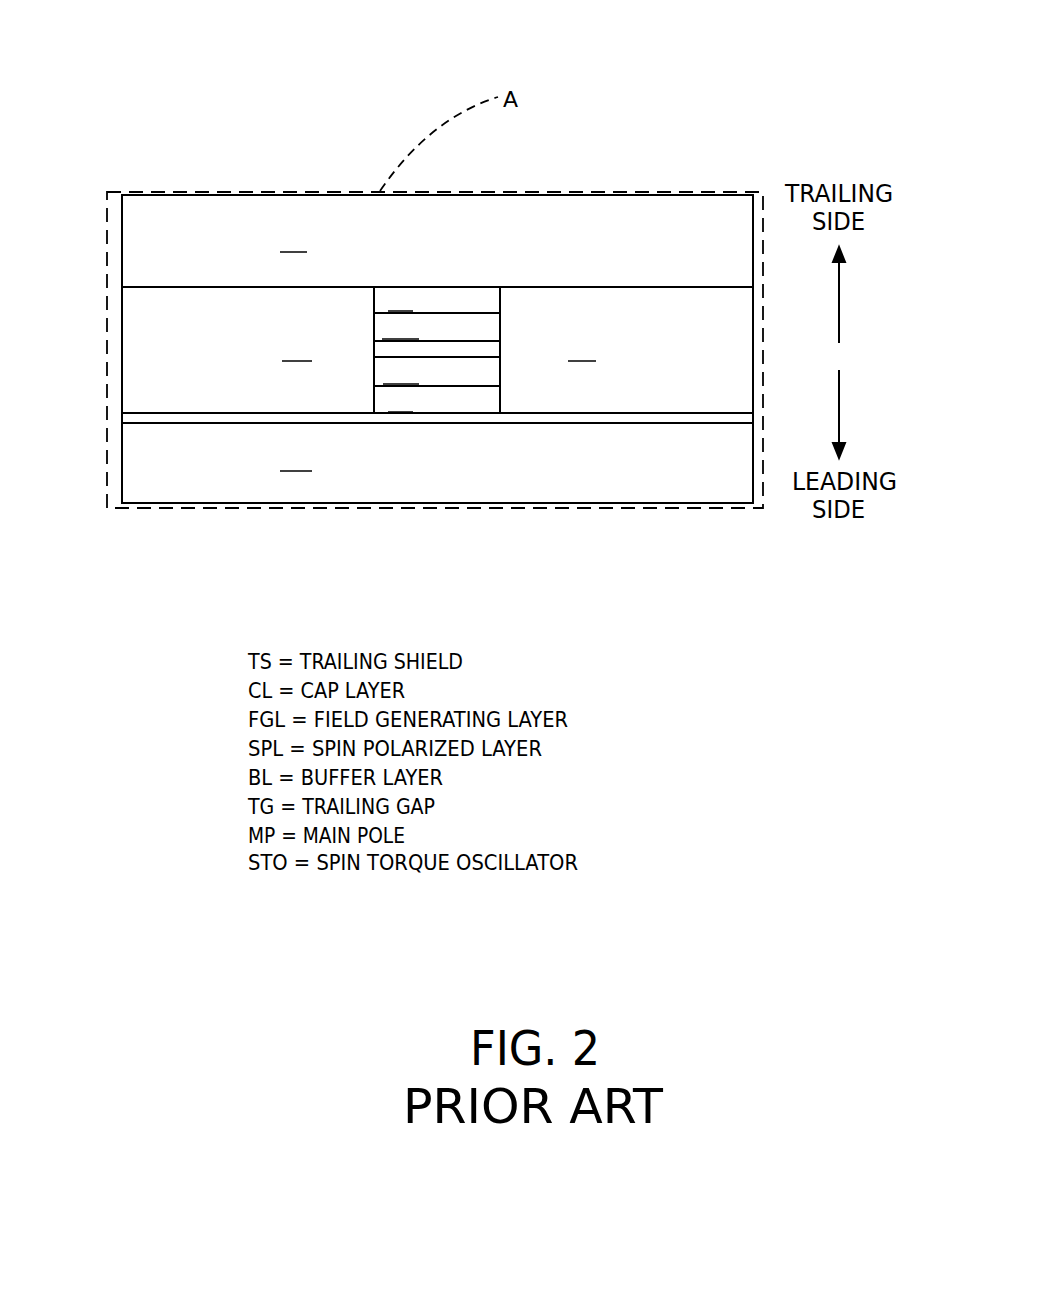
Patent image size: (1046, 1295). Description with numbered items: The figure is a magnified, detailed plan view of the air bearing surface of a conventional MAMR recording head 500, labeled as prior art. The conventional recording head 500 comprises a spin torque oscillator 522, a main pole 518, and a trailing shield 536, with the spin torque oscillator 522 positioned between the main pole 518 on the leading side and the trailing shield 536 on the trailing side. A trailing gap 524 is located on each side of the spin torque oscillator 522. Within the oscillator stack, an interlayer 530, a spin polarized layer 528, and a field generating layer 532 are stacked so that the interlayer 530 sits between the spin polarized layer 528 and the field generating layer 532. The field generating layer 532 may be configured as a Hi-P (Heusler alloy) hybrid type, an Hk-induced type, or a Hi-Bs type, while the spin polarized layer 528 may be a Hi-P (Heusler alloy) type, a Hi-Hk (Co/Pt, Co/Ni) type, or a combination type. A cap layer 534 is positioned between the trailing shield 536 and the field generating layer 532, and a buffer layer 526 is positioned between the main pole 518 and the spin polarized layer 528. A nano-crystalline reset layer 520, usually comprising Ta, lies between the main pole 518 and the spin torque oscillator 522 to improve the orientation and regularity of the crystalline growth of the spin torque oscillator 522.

The conventional MAMR recording head 500 is at (356, 30).
The main pole 518 is at (452, 471).
The nano-crystalline reset layer 520 is at (152, 419).
The spin torque oscillator 522 is at (530, 321).
The trailing gap 524 is at (437, 350).
The buffer layer 526 is at (488, 412).
The spin polarized layer 528 is at (488, 384).
The interlayer 530 is at (501, 350).
The field generating layer 532 is at (488, 339).
The cap layer 534 is at (488, 311).
The trailing shield 536 is at (452, 252).